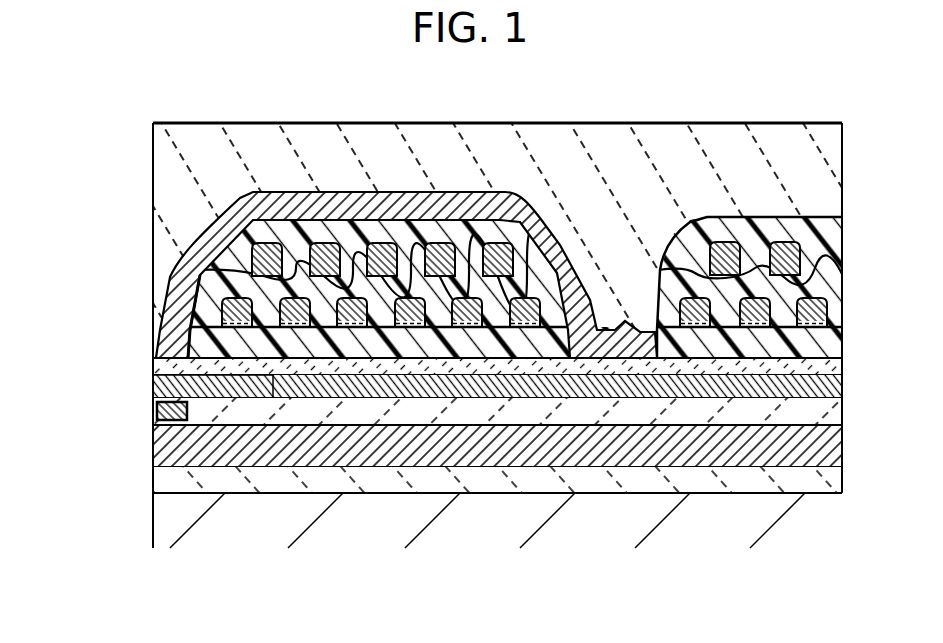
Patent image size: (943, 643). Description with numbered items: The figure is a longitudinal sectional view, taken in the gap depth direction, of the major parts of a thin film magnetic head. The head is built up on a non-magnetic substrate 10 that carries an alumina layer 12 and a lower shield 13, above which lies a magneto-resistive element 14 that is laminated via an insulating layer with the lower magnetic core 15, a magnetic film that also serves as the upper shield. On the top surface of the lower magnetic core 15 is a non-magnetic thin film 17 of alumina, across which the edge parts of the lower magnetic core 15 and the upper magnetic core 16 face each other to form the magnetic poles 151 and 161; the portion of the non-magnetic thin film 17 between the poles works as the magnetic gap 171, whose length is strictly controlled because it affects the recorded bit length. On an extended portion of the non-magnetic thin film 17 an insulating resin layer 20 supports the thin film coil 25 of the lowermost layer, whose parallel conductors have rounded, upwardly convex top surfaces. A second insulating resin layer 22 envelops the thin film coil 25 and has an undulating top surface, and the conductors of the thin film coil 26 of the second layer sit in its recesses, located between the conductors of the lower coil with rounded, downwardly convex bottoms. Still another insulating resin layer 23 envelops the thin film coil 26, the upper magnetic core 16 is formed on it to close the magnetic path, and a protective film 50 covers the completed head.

The non-magnetic substrate 10 is at (725, 522).
The alumina layer 12 is at (584, 470).
The lower shield 13 is at (655, 445).
The magneto-resistive element 14 is at (156, 413).
The lower magnetic core 15 is at (817, 387).
The magnetic pole 151 is at (163, 388).
The upper magnetic core 16 is at (258, 190).
The magnetic pole 161 is at (165, 345).
The non-magnetic thin film 17 is at (343, 377).
The magnetic gap 171 is at (165, 369).
The insulating resin layer 20 is at (410, 350).
The second insulating resin layer 22 is at (438, 322).
The insulating resin layer 23 is at (312, 227).
The thin film coil of the lowermost layer 25 is at (290, 313).
The thin film coil of the second layer 26 is at (378, 241).
The protective film 50 is at (677, 130).